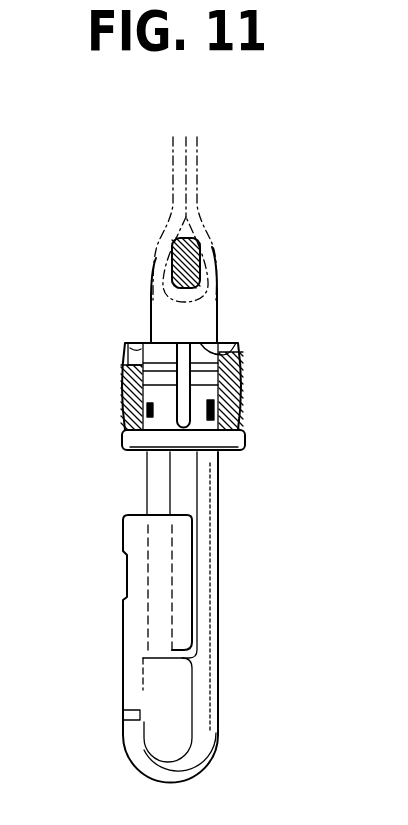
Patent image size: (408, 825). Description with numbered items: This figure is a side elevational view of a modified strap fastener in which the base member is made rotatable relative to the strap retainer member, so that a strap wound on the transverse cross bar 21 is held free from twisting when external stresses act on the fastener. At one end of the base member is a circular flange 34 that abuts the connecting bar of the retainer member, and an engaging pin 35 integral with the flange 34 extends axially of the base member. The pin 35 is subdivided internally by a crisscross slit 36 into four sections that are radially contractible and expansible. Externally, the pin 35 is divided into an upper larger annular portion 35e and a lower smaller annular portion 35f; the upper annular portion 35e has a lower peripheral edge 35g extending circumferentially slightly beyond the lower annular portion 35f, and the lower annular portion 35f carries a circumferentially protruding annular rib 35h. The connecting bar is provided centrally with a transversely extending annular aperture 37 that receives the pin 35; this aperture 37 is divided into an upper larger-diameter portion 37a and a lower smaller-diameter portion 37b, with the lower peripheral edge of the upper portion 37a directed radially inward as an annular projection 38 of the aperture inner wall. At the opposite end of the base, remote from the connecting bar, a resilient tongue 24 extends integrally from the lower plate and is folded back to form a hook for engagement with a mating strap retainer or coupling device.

The transverse cross bar 21 is at (203, 268).
The resilient tongue 24 is at (130, 743).
The circular flange 34 is at (130, 443).
The engaging pin 35 is at (162, 338).
The upper larger annular portion 35e is at (143, 352).
The lower smaller annular portion 35f is at (152, 405).
The lower peripheral edge 35g is at (140, 372).
The annular rib 35h is at (240, 388).
The crisscross slit 36 is at (187, 405).
The annular aperture 37 is at (205, 340).
The upper larger-diameter portion 37a is at (242, 352).
The lower smaller-diameter portion 37b is at (223, 412).
The annular projection 38 is at (237, 380).